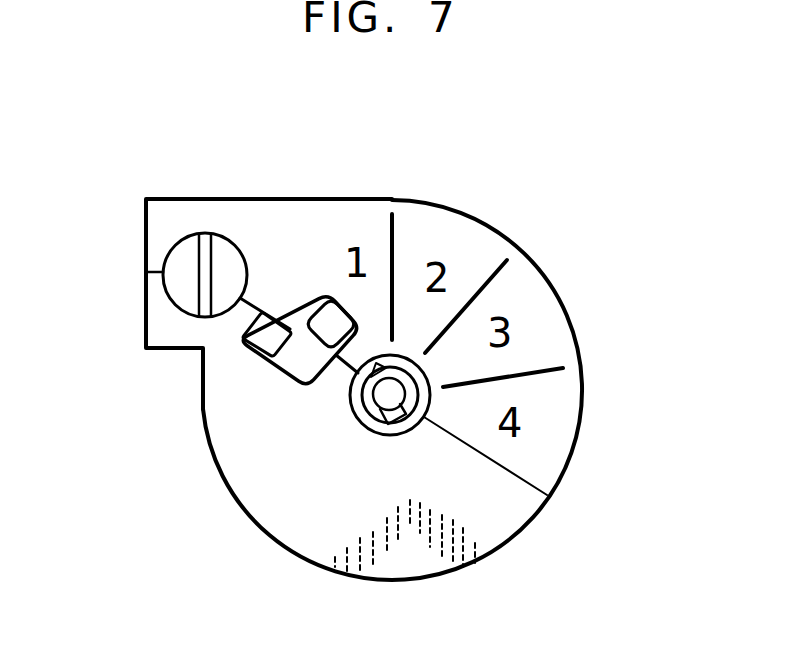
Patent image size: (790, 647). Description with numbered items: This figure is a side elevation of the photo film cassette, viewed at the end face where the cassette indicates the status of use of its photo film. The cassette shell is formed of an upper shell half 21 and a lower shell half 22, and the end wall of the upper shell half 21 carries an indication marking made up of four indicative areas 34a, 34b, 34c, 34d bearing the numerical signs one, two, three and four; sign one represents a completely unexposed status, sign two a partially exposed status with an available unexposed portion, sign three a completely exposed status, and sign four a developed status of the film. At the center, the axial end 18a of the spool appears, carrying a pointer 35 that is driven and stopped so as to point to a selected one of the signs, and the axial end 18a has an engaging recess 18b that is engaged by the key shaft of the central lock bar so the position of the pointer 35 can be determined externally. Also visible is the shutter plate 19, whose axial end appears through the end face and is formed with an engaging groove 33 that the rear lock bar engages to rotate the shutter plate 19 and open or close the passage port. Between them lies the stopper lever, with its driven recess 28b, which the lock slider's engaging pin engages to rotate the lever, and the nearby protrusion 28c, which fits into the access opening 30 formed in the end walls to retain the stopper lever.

The axial end 18a is at (418, 402).
The engaging recess 18b is at (388, 398).
The shutter plate 19 is at (175, 256).
The upper shell half 21 is at (297, 212).
The lower shell half 22 is at (308, 530).
The driven recess 28b is at (325, 318).
The protrusion 28c is at (264, 338).
The access opening 30 is at (302, 388).
The engaging groove 33 is at (211, 253).
The indicative area 34a is at (377, 213).
The indicative area 34b is at (485, 245).
The indicative area 34c is at (552, 333).
The indicative area 34d is at (558, 432).
The pointer 35 is at (372, 374).